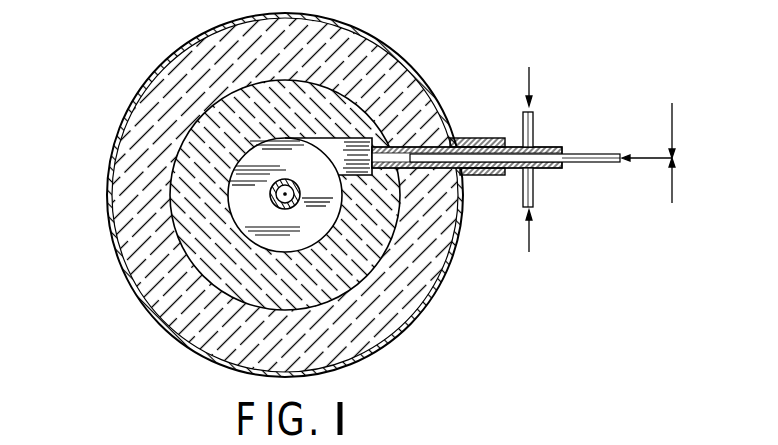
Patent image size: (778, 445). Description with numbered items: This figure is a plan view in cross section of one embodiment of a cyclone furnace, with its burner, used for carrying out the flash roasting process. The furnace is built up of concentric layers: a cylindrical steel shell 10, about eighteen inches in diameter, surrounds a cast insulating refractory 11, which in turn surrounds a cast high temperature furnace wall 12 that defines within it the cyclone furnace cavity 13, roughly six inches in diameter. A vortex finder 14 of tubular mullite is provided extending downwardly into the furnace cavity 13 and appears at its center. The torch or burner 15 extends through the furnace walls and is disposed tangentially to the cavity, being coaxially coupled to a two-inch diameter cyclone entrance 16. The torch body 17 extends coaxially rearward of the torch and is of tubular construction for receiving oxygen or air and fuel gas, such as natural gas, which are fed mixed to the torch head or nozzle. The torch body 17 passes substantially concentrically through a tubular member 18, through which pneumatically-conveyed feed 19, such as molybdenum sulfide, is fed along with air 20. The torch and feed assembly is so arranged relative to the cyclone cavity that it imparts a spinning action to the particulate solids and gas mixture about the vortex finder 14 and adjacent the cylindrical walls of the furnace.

The cylindrical steel shell 10 is at (337, 365).
The cast insulating refractory 11 is at (350, 333).
The cast high temperature furnace wall 12 is at (328, 290).
The cyclone furnace cavity 13 is at (307, 233).
The vortex finder 14 is at (295, 207).
The torch or burner 15 is at (440, 113).
The cyclone entrance 16 is at (350, 144).
The torch body 17 is at (577, 168).
The tubular member 18 is at (548, 148).
The pneumatically-conveyed feed 19 is at (551, 96).
The air 20 is at (548, 222).